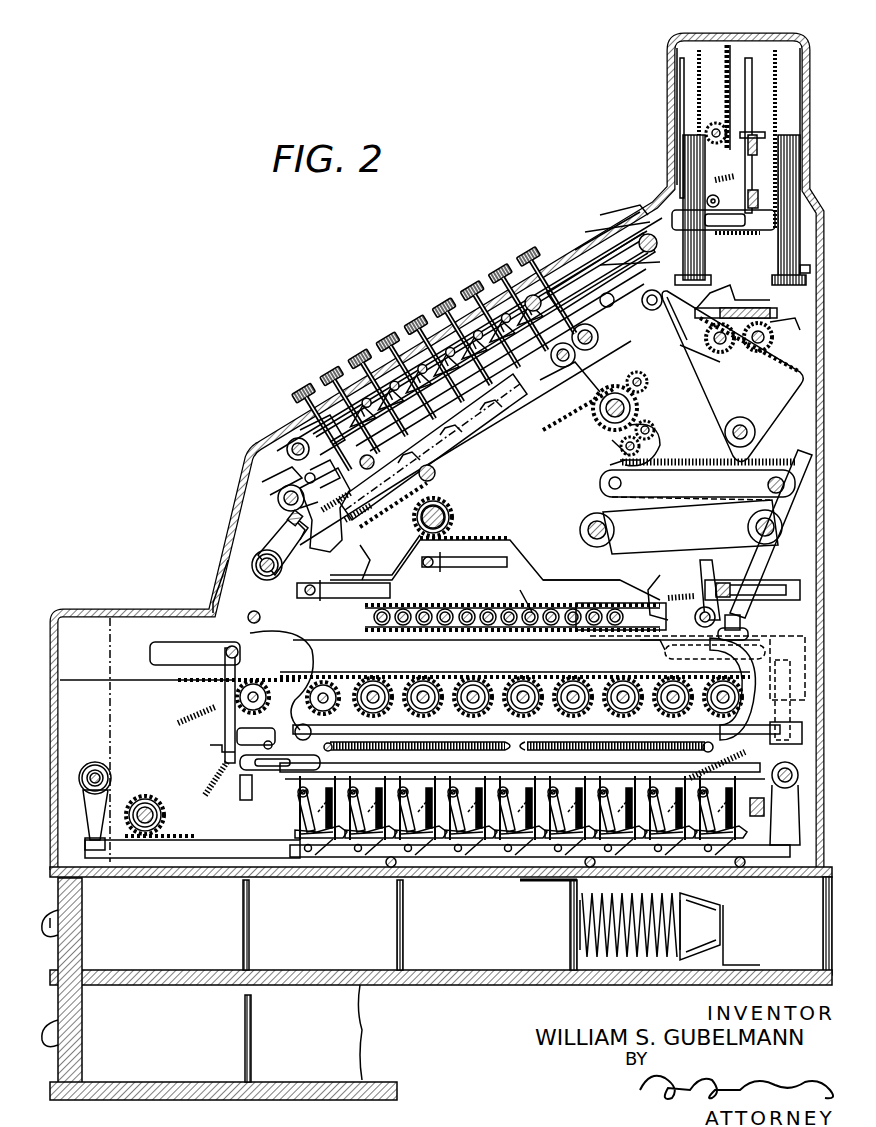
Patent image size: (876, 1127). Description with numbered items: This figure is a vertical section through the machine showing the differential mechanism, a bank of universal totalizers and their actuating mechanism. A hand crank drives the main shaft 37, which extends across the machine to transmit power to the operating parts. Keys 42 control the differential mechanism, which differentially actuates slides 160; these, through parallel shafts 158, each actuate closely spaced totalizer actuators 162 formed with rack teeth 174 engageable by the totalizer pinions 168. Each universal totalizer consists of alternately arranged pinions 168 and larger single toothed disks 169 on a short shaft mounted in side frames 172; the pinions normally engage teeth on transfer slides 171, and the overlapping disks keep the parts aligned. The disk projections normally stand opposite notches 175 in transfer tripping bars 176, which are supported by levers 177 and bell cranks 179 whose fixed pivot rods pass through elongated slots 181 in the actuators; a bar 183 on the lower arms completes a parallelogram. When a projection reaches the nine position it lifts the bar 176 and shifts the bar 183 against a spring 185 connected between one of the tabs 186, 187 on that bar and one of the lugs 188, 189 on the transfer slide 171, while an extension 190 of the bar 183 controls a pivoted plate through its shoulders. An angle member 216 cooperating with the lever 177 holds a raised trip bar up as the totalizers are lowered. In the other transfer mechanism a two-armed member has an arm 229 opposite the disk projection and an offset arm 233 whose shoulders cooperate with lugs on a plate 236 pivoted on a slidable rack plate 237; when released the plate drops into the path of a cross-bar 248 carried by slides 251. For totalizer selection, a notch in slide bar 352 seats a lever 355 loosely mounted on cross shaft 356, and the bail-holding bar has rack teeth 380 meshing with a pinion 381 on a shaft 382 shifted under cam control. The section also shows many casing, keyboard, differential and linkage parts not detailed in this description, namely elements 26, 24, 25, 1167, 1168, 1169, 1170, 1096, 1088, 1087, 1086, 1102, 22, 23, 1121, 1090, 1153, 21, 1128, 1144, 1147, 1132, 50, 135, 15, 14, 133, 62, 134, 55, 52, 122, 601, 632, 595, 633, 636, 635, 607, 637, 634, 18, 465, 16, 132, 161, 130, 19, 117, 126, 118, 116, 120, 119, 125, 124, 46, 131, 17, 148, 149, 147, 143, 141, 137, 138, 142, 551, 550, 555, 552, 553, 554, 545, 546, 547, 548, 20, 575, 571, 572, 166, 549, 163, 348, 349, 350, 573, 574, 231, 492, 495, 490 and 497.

The casing 26 is at (52, 692).
The base plate 24 is at (335, 878).
The base support 25 is at (833, 940).
The left support column 1167 is at (85, 935).
The bottom plate 1168 is at (85, 1030).
The spring 1169 is at (635, 900).
The spring plunger 1170 is at (703, 926).
The guide rod 1096 is at (698, 50).
The rack bar 1088 is at (748, 45).
The housing wall 1087 is at (668, 70).
The guide rod 1086 is at (681, 92).
The pinion 1102 is at (708, 133).
The block 22 is at (752, 148).
The block 23 is at (755, 188).
The rack 1121 is at (720, 182).
The flange 1090 is at (810, 266).
The bracket 1153 is at (720, 282).
The spring bar 21 is at (775, 308).
The gear 1128 is at (720, 352).
The gear 1144 is at (772, 340).
The pawl 1147 is at (772, 325).
The triangular plate 1132 is at (732, 376).
The keys 42 is at (516, 266).
The key frame rails 50 is at (470, 315).
The key levers 135 is at (530, 392).
The key bar 15 is at (437, 446).
The key frame 14 is at (378, 460).
The pin 133 is at (428, 468).
The lug 62 is at (420, 450).
The spring 134 is at (368, 464).
The shaft 55 is at (310, 420).
The lever 52 is at (300, 440).
The lever 122 is at (295, 450).
The arm 601 is at (300, 475).
The pin 632 is at (290, 495).
The shaft 595 is at (285, 497).
The link 633 is at (300, 512).
The arm 636 is at (295, 530).
The lever arm 635 is at (283, 545).
The shaft 607 is at (252, 565).
The plate 637 is at (312, 542).
The spring 634 is at (378, 522).
The bar 18 is at (305, 571).
The pin 465 is at (252, 614).
The plate 16 is at (445, 478).
The rack 132 is at (560, 420).
The main shaft 37 is at (455, 510).
The shaft 161 is at (452, 518).
The plate 130 is at (360, 545).
The slides 160 is at (464, 569).
The plate 19 is at (422, 560).
The lever 117 is at (605, 246).
The pivot 126 is at (658, 243).
The link 118 is at (655, 262).
The pivot 116 is at (655, 292).
The shaft 120 is at (628, 298).
The link 119 is at (672, 308).
The arm 125 is at (648, 206).
The link 124 is at (655, 222).
The bar 46 is at (640, 232).
The arm 131 is at (660, 356).
The lever 17 is at (560, 372).
The pinion 148 is at (648, 380).
The gear 149 is at (638, 406).
The shaft 147 is at (600, 398).
The cam 143 is at (660, 428).
The pinion 141 is at (652, 436).
The pinion 137 is at (612, 432).
The link 138 is at (618, 447).
The link 142 is at (622, 458).
The link 551 is at (610, 472).
The spring 550 is at (697, 460).
The link bar 555 is at (697, 483).
The pivot 552 is at (613, 493).
The pin 553 is at (785, 486).
The edge 554 is at (760, 503).
The plate 545 is at (690, 527).
The shaft 546 is at (585, 540).
The shaft 547 is at (783, 528).
The lever 548 is at (775, 558).
The bar 20 is at (720, 592).
The lever 575 is at (705, 598).
The hook 571 is at (660, 594).
The pivot 572 is at (700, 598).
The block 166 is at (742, 618).
The link 549 is at (750, 633).
The slide bar 352 is at (812, 638).
The bell crank 179 is at (760, 663).
The lever 355 is at (800, 697).
The extension 190 is at (805, 732).
The cross shaft 356 is at (800, 768).
The lug 189 is at (712, 746).
The parallel shafts 158 is at (502, 608).
The rollers 163 is at (392, 608).
The link 348 is at (530, 608).
The plate 349 is at (565, 608).
The rack 350 is at (595, 612).
The elongated slots 181 is at (185, 640).
The totalizer actuators 162 is at (180, 646).
The transfer slides 171 is at (536, 687).
The transfer tripping bars 176 is at (515, 677).
The pinions 168 is at (343, 680).
The single toothed disks 169 is at (392, 680).
The notches 175 is at (510, 678).
The rack teeth 174 is at (565, 678).
The link 573 is at (650, 635).
The link 574 is at (667, 650).
The spring 185 is at (390, 744).
The tab 186 is at (322, 742).
The lug 188 is at (518, 744).
The tab 187 is at (530, 744).
The bar 183 is at (656, 736).
The slides 251 is at (522, 767).
The side frame 172 is at (525, 778).
The arm 229 is at (215, 688).
The slidable rack plate 237 is at (259, 705).
The angle member 216 is at (228, 654).
The levers 177 is at (268, 658).
The downwardly extending arm 233 is at (210, 726).
The plate 236 is at (210, 748).
The bracket 231 is at (258, 764).
The cross-bar 248 is at (280, 762).
The shaft 492 is at (82, 779).
The hub 495 is at (88, 772).
The lever 490 is at (85, 784).
The bar 497 is at (90, 810).
The pinion 381 is at (150, 800).
The shaft 382 is at (150, 804).
The rack teeth 380 is at (170, 834).